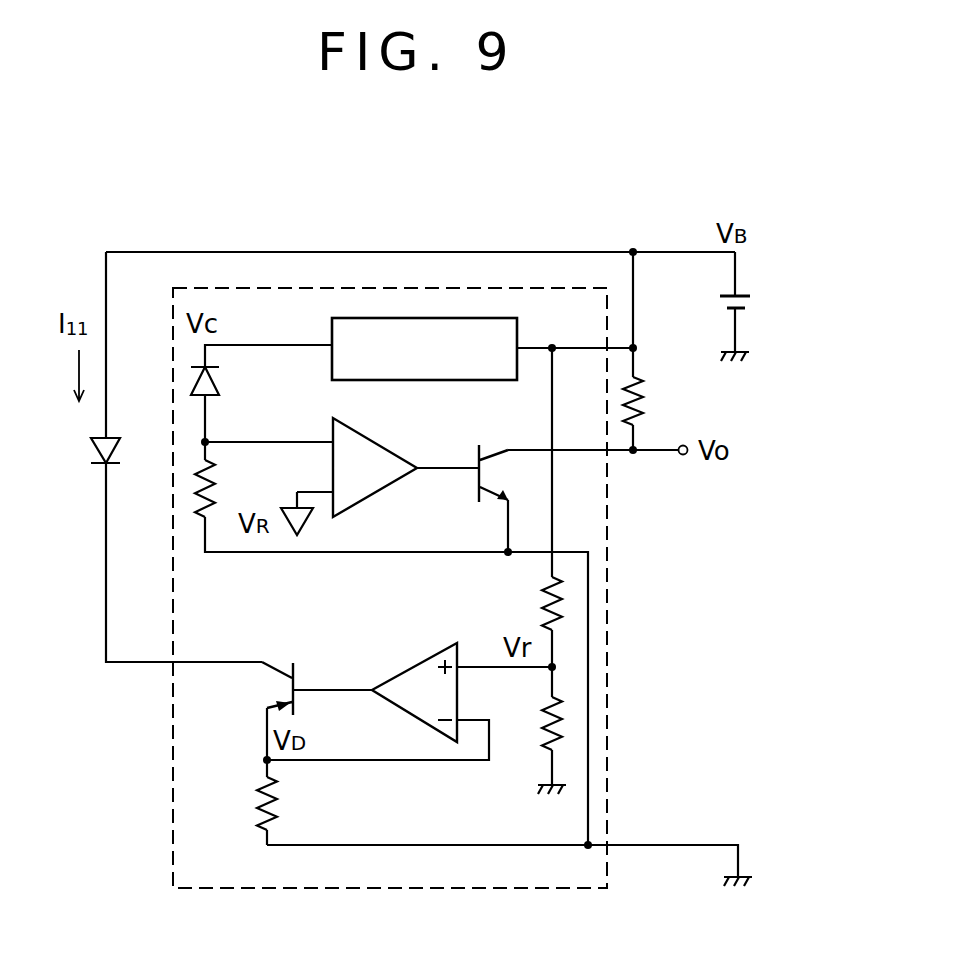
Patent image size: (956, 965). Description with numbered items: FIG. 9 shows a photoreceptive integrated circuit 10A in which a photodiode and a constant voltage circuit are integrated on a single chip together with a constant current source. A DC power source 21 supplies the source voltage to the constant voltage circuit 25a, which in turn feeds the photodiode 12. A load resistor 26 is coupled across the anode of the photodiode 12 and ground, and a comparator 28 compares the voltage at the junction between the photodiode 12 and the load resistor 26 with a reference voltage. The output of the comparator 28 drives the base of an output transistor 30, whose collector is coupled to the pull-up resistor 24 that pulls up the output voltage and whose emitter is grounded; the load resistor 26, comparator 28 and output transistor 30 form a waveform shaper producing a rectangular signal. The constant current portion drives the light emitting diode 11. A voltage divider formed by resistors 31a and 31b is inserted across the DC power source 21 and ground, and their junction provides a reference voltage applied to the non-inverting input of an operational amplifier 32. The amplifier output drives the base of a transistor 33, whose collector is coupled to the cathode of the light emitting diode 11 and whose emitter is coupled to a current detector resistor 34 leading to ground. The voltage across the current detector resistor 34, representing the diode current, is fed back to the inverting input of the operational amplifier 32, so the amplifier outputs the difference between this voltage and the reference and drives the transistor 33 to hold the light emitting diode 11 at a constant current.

The photoreceptive integrated circuit 10A is at (555, 888).
The light emitting diode 11 is at (91, 452).
The photodiode 12 is at (219, 388).
The DC power source 21 is at (745, 302).
The pull-up resistor 24 is at (643, 414).
The constant voltage circuit 25a is at (517, 336).
The load resistor 26 is at (216, 492).
The comparator 28 is at (397, 468).
The output transistor 30 is at (488, 466).
The resistor 31a is at (546, 612).
The resistor 31b is at (546, 714).
The operational amplifier 32 is at (396, 675).
The transistor 33 is at (283, 690).
The current detector resistor 34 is at (278, 798).